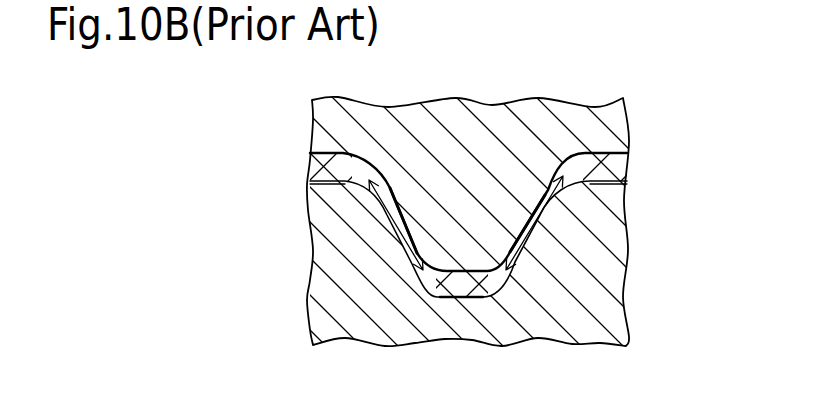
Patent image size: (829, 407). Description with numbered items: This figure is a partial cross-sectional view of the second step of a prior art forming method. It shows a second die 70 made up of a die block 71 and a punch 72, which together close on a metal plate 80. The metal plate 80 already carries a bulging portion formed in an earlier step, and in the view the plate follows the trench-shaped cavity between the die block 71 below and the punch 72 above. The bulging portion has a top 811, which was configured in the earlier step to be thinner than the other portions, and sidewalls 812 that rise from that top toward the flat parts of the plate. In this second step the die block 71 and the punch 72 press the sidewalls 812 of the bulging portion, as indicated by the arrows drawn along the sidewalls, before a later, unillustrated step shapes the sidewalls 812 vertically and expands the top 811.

The second die 70 is at (449, 225).
The die block 71 is at (688, 113).
The punch 72 is at (627, 119).
The metal plate 80 is at (308, 180).
The top 811 is at (470, 298).
The sidewalls 812 is at (398, 216).